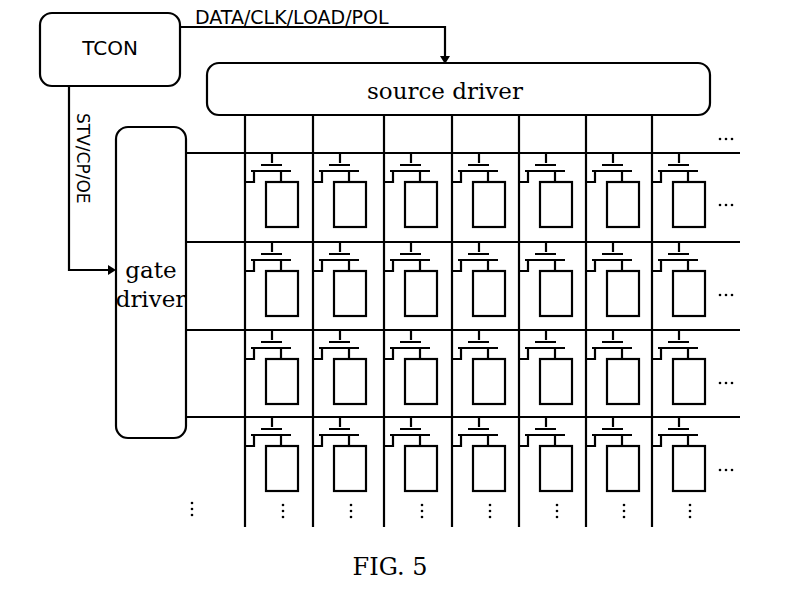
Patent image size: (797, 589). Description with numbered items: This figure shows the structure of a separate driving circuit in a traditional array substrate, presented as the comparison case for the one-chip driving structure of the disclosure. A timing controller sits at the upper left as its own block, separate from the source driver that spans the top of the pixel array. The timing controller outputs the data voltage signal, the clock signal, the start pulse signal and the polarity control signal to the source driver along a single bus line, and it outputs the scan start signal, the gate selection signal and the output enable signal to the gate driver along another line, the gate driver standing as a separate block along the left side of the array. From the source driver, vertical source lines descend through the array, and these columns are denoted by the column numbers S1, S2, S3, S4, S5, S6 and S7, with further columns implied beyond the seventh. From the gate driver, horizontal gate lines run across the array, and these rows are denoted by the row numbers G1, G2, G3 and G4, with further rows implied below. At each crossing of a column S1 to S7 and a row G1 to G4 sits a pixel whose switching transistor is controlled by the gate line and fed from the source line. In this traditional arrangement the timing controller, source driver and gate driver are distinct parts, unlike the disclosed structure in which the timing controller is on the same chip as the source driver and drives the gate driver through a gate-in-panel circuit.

The column number S1 is at (257, 321).
The column number S2 is at (325, 321).
The column number S3 is at (396, 321).
The column number S4 is at (464, 321).
The column number S5 is at (531, 321).
The column number S6 is at (598, 321).
The column number S7 is at (664, 321).
The row number G1 is at (463, 167).
The row number G2 is at (463, 256).
The row number G3 is at (463, 344).
The row number G4 is at (463, 431).